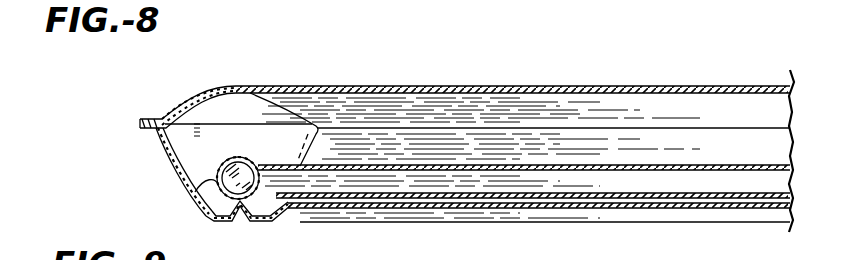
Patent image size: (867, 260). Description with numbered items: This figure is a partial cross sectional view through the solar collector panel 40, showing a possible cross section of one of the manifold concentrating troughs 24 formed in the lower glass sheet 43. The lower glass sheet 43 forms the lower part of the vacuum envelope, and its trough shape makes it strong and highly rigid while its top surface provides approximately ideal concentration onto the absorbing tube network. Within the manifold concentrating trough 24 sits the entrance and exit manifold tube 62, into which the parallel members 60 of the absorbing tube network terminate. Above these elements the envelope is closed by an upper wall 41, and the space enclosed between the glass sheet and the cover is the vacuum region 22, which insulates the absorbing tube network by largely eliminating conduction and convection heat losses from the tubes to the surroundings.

The solar collector panel 40 is at (163, 92).
The vacuum region 22 is at (197, 124).
The top cover wall 41 is at (400, 86).
The manifold concentrating trough 24 is at (182, 162).
The entrance and exit manifold tube 62 is at (195, 197).
The lower glass sheet 43 is at (293, 207).
The parallel member 60 is at (740, 185).